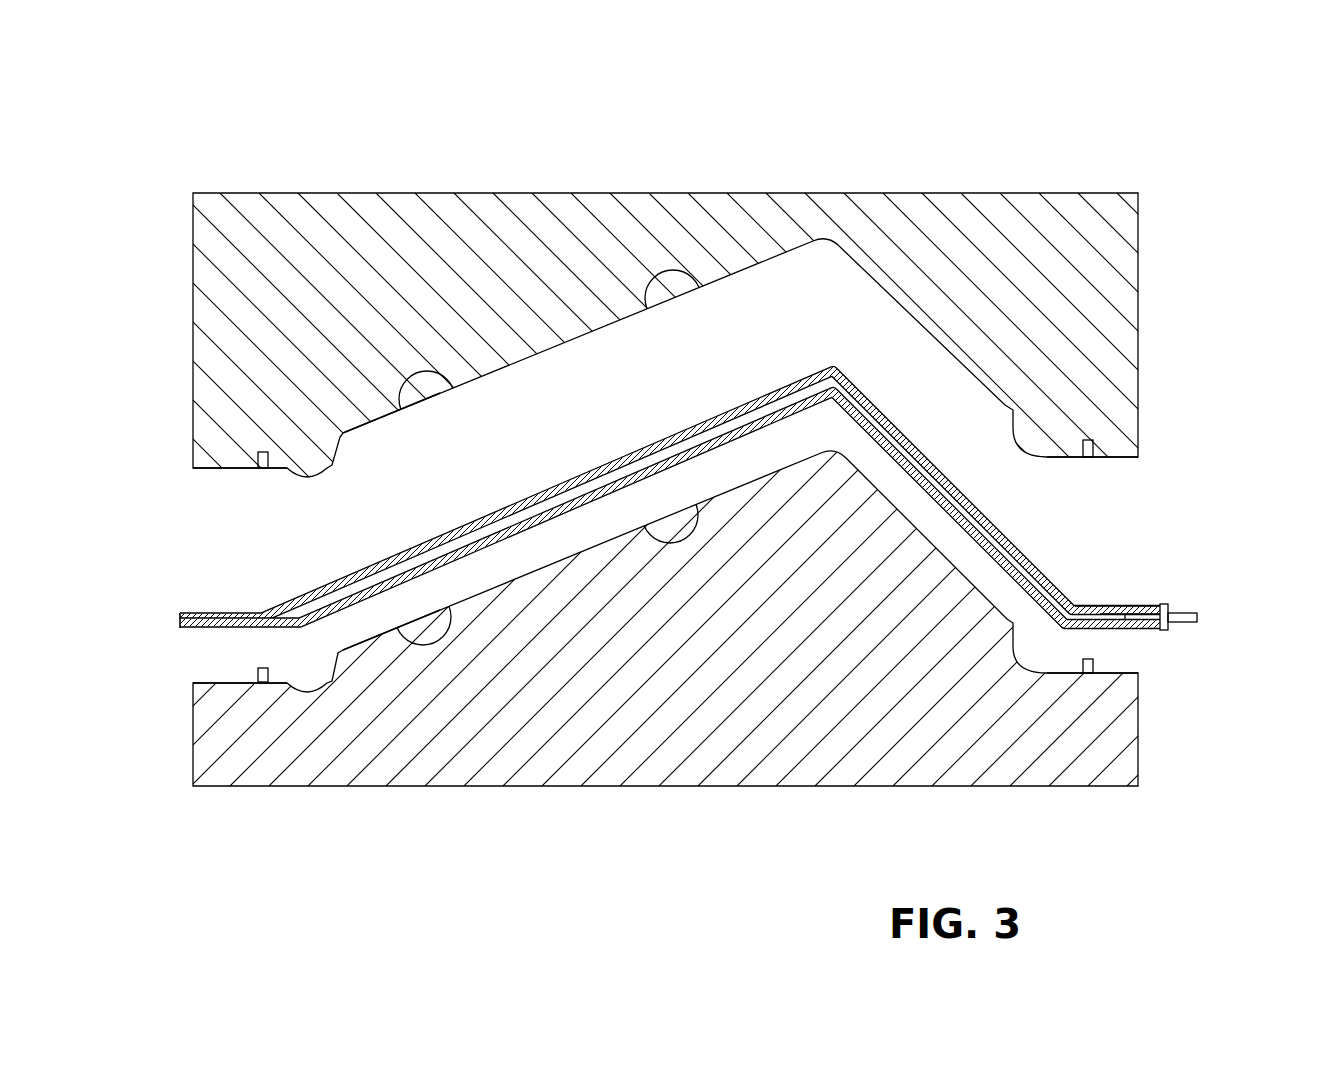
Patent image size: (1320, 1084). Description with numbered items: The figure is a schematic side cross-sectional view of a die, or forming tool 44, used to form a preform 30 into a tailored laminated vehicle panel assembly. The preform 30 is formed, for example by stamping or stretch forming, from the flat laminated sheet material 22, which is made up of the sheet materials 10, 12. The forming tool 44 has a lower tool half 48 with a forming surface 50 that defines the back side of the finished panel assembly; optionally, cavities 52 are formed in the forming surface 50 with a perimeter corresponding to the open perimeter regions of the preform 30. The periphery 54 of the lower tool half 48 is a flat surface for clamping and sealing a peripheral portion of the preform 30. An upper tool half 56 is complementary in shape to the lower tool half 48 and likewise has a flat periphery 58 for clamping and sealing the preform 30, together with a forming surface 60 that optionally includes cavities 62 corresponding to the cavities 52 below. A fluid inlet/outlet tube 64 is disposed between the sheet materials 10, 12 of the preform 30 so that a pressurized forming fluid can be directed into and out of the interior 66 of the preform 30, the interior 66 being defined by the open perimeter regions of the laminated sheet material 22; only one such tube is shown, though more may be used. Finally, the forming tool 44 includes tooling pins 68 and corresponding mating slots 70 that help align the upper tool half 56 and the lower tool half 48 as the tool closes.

The forming tool 44 is at (1080, 152).
The upper tool half 56 is at (1138, 272).
The lower tool half 48 is at (1138, 683).
The forming surface 60 is at (392, 420).
The forming surface 50 is at (347, 647).
The cavities 62 is at (425, 388).
The cavities 52 is at (427, 630).
The mating slots 70 is at (250, 460).
The tooling pins 68 is at (256, 674).
The periphery 58 is at (242, 470).
The periphery 54 is at (225, 686).
The sheet material 10 is at (183, 614).
The sheet material 12 is at (183, 626).
The laminated sheet material 22 is at (1112, 606).
The interior 66 is at (1090, 612).
The preform 30 is at (1168, 598).
The fluid inlet/outlet tube 64 is at (1187, 623).